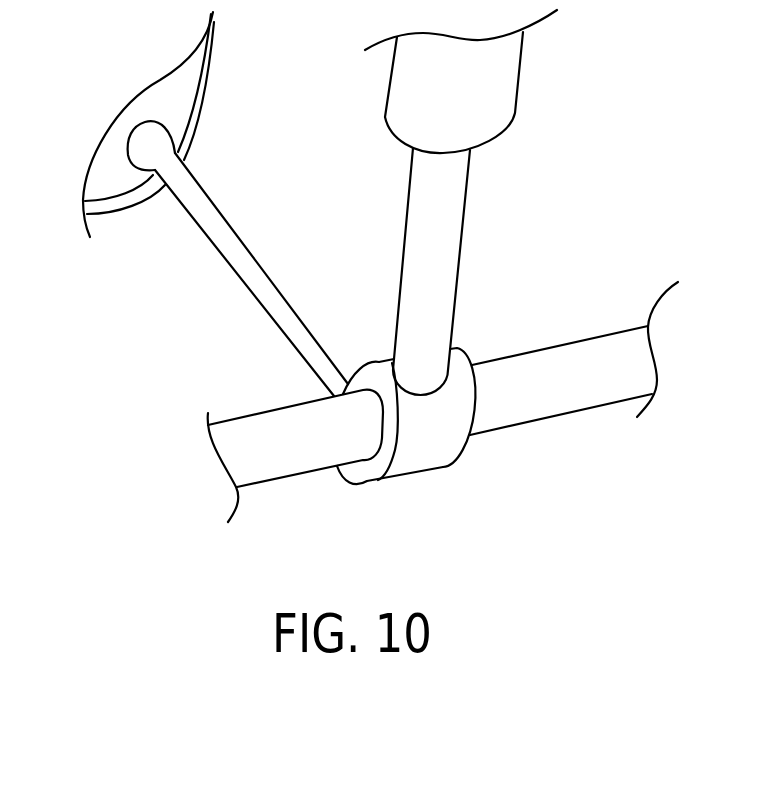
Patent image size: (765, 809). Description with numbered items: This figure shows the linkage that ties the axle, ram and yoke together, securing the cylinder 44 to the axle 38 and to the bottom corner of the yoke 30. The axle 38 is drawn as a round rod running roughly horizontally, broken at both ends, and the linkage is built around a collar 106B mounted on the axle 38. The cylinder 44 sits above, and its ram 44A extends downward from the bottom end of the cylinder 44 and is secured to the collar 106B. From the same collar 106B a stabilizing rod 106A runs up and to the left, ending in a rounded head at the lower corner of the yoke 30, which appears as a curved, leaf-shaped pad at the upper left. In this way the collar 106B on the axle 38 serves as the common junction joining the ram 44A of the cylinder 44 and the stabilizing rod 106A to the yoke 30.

The yoke 30 is at (172, 105).
The stabilizing rod 106A is at (237, 255).
The cylinder 44 is at (493, 82).
The ram 44A is at (428, 195).
The axle 38 is at (520, 372).
The collar 106B is at (412, 458).